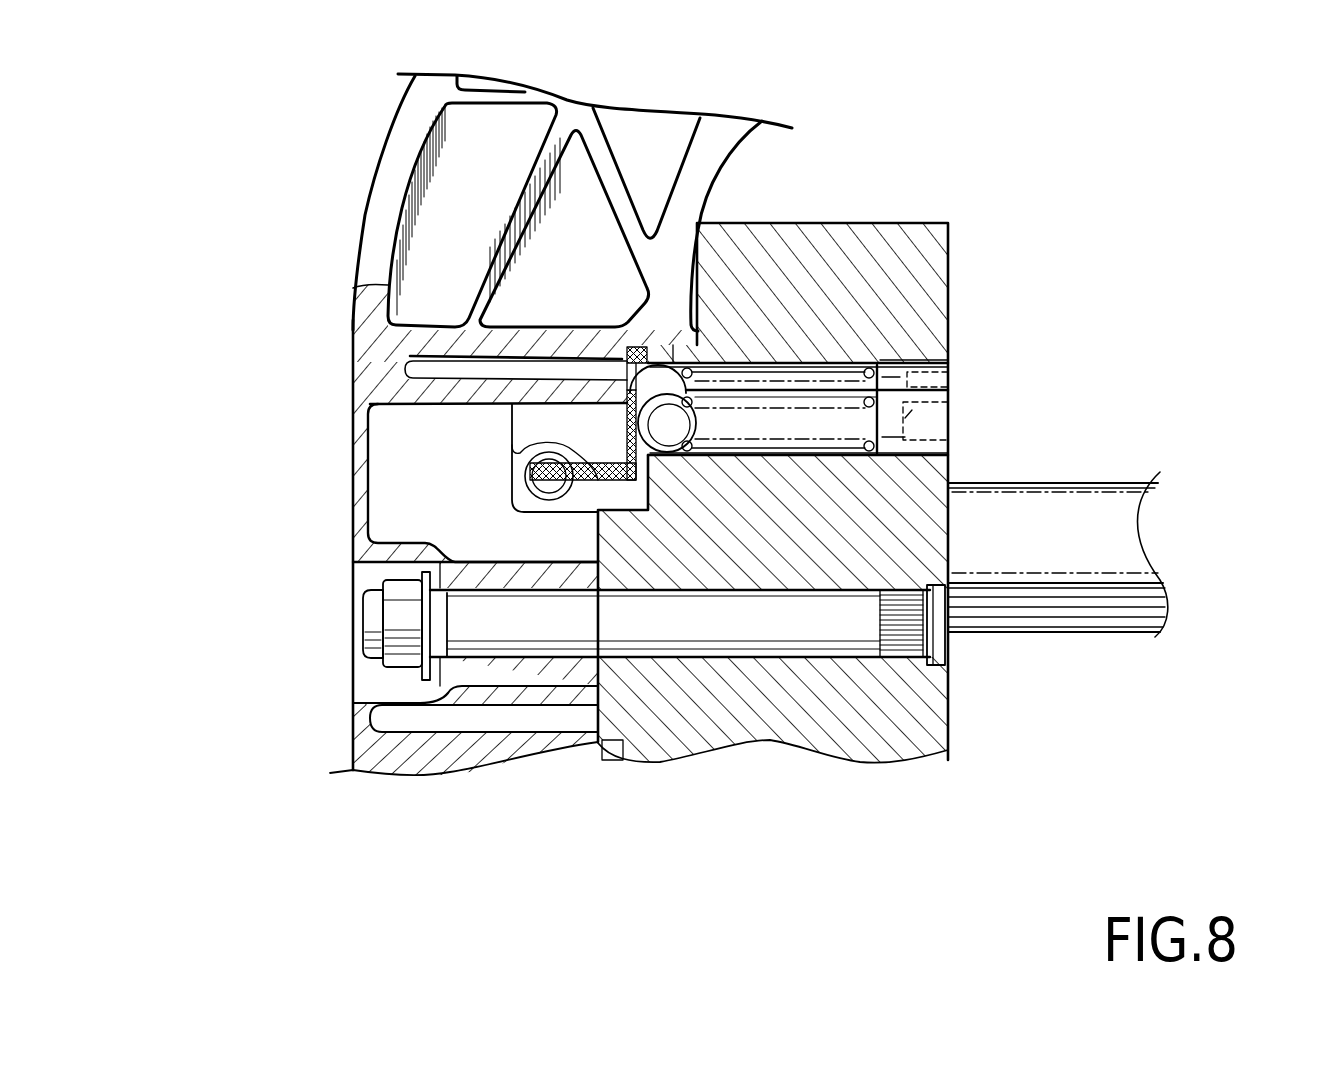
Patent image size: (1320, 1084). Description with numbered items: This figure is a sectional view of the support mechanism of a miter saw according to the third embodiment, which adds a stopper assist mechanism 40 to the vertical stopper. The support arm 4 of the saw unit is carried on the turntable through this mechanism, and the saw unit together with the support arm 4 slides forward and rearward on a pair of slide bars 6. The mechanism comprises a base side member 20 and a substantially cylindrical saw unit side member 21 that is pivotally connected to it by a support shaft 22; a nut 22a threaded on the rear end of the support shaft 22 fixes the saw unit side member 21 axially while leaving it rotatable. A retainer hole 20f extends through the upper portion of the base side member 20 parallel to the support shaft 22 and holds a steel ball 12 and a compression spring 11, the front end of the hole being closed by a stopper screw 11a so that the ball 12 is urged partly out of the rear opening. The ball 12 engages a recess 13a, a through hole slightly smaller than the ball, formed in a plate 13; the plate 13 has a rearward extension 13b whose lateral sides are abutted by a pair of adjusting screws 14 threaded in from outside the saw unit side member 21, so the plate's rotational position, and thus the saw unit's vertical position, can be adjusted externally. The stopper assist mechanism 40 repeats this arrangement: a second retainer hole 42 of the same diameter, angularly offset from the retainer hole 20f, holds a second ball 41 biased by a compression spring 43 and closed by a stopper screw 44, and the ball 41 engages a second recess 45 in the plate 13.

The support arm 4 is at (390, 123).
The ball 12 is at (640, 282).
The plate 13 is at (650, 300).
The recess 13a is at (640, 347).
The extension 13b is at (525, 466).
The adjusting screws 14 is at (362, 447).
The saw unit side member 21 is at (355, 462).
The support shaft 22 is at (530, 603).
The nut 22a is at (400, 610).
The recess 45 is at (630, 448).
The base side member 20 is at (948, 263).
The retainer hole 20f is at (742, 372).
The stopper assist mechanism 40 is at (771, 433).
The compression spring 11 is at (793, 363).
The stopper screw 11a is at (920, 361).
The stopper screw 44 is at (930, 434).
The slide bars 6 is at (1122, 482).
The compression spring 43 is at (953, 600).
The retainer hole 42 is at (947, 710).
The ball 41 is at (925, 757).